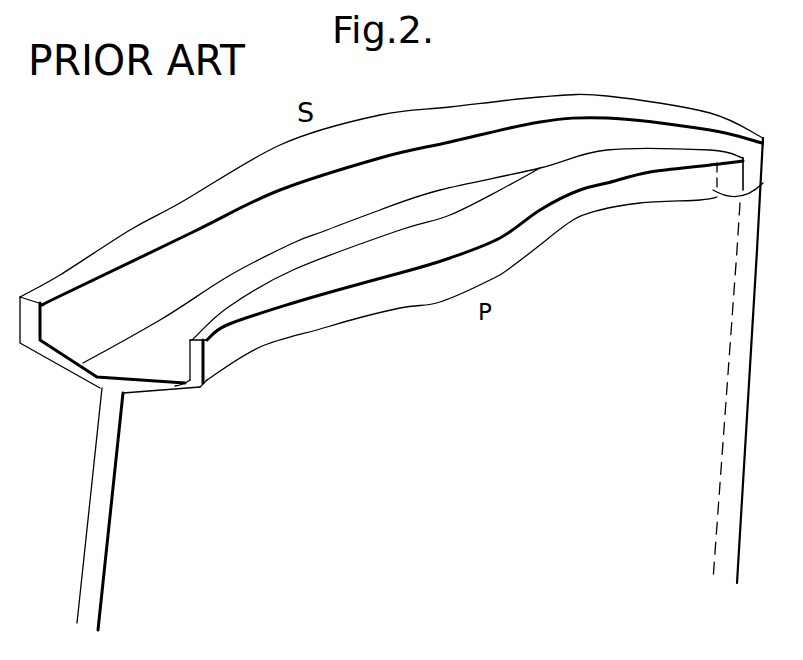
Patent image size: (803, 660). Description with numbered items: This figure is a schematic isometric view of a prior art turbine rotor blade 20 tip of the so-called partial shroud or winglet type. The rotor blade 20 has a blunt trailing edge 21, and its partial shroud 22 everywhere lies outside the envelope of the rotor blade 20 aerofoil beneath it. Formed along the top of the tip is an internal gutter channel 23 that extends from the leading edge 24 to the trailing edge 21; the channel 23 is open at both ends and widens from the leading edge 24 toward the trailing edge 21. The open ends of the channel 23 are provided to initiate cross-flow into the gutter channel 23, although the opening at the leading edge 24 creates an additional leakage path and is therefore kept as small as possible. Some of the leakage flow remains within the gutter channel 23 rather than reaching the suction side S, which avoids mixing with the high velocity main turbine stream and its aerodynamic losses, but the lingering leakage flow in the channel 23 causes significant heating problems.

The rotor blade 20 is at (507, 427).
The trailing edge 21 is at (27, 292).
The partial shroud 22 is at (220, 190).
The gutter channel 23 is at (268, 273).
The leading edge 24 is at (761, 134).